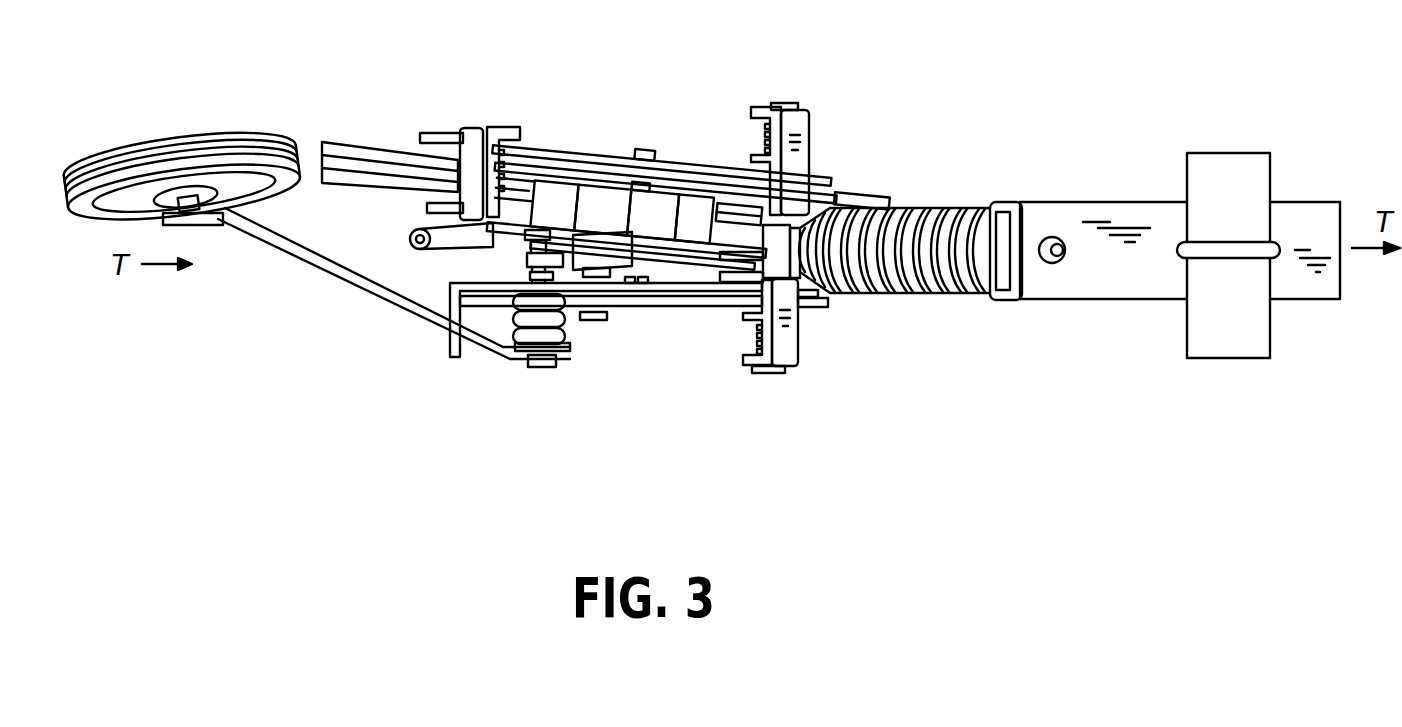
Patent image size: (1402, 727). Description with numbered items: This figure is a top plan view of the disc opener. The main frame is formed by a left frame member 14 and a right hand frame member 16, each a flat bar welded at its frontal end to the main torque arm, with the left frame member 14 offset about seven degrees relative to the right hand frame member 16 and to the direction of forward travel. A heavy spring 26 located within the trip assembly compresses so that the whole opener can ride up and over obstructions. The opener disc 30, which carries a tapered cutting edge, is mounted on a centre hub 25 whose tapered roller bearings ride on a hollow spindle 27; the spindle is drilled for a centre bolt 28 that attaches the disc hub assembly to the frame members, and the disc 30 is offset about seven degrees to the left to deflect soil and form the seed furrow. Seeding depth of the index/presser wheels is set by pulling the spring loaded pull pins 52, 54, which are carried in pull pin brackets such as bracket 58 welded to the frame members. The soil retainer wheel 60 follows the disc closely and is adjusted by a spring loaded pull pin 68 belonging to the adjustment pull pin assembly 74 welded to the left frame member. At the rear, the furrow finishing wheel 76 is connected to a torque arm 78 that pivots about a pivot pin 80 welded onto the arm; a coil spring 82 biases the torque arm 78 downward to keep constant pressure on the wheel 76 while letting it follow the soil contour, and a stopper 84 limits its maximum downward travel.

The left frame member 14 is at (860, 198).
The right hand frame member 16 is at (822, 308).
The centre hub 25 is at (610, 197).
The heavy spring 26 is at (930, 217).
The hollow spindle 27 is at (600, 274).
The centre bolt 28 is at (595, 322).
The opener disc 30 is at (685, 225).
The spring loaded pull pin 52 is at (782, 108).
The spring loaded pull pin 54 is at (763, 378).
The pull pin bracket 58 is at (797, 350).
The soil retainer wheel 60 is at (398, 150).
The spring loaded pull pin 68 is at (488, 238).
The adjustment pull pin assembly 74 is at (475, 130).
The furrow finishing wheel 76 is at (223, 145).
The torque arm 78 is at (348, 278).
The pivot pin 80 is at (538, 372).
The coil spring 82 is at (565, 344).
The stopper 84 is at (447, 349).